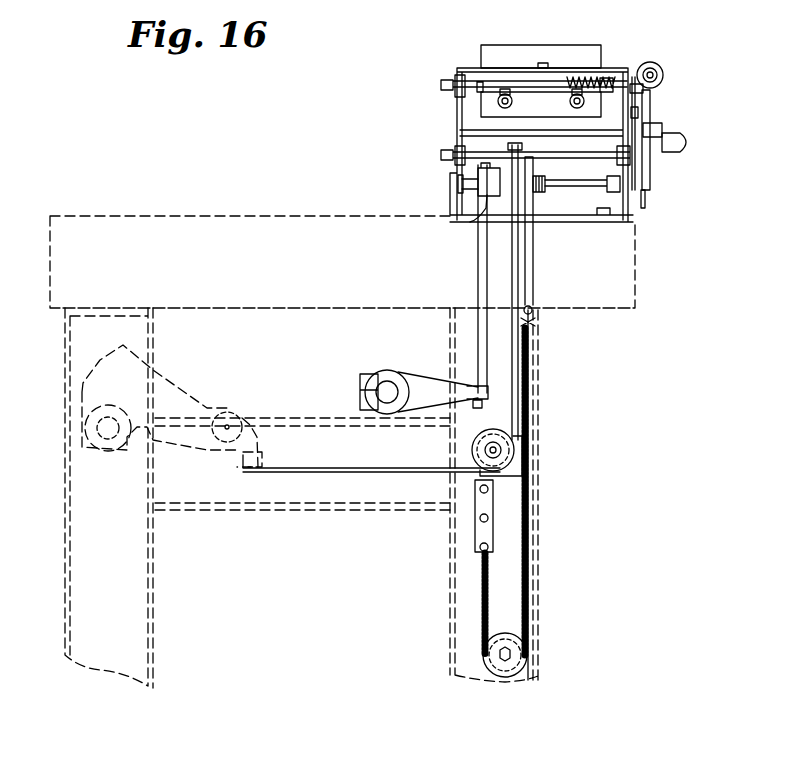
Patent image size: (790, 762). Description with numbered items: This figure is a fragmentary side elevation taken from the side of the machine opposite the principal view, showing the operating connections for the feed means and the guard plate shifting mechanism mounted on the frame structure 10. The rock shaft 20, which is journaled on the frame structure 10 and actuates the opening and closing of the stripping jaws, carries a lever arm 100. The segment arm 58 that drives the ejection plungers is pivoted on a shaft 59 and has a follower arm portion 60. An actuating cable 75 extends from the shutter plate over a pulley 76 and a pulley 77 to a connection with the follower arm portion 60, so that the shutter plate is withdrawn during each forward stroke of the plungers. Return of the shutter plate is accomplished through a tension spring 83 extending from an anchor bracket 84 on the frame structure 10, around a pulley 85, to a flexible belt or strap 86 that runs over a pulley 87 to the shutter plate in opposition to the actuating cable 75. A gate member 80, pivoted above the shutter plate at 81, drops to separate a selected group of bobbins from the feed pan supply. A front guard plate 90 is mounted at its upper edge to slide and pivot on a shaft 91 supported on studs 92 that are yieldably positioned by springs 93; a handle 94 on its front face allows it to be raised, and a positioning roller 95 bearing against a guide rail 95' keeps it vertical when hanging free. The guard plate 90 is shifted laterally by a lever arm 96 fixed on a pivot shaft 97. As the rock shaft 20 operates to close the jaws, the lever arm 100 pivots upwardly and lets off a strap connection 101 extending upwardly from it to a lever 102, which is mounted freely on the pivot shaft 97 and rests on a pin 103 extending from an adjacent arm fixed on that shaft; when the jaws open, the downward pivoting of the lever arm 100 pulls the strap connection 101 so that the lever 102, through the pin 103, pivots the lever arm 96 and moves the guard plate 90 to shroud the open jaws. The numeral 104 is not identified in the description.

The frame structure 10 is at (298, 511).
The rock shaft 20 is at (386, 390).
The segment arm 58 is at (82, 397).
The shaft 59 is at (108, 430).
The follower arm portion 60 is at (240, 410).
The actuating cable 75 is at (518, 264).
The pulley 76 is at (460, 148).
The pulley 77 is at (489, 450).
The gate member 80 is at (528, 56).
The pivot 81 is at (477, 76).
The tension spring 83 is at (480, 557).
The anchor bracket 84 is at (477, 532).
The pulley 85 is at (504, 672).
The flexible belt or strap 86 is at (533, 291).
The pulley 87 is at (534, 191).
The front guard plate 90 is at (645, 207).
The shaft 91 is at (660, 66).
The studs 92 is at (660, 88).
The springs 93 is at (610, 80).
The handle 94 is at (691, 142).
The positioning roller 95 is at (675, 125).
The guide rail 95' is at (660, 108).
The lever arm 96 is at (650, 175).
The pivot shaft 97 is at (575, 188).
The lever arm 100 is at (427, 384).
The strap connection 101 is at (478, 286).
The lever 102 is at (477, 172).
The pin 103 is at (477, 190).
The wire 104 is at (463, 220).